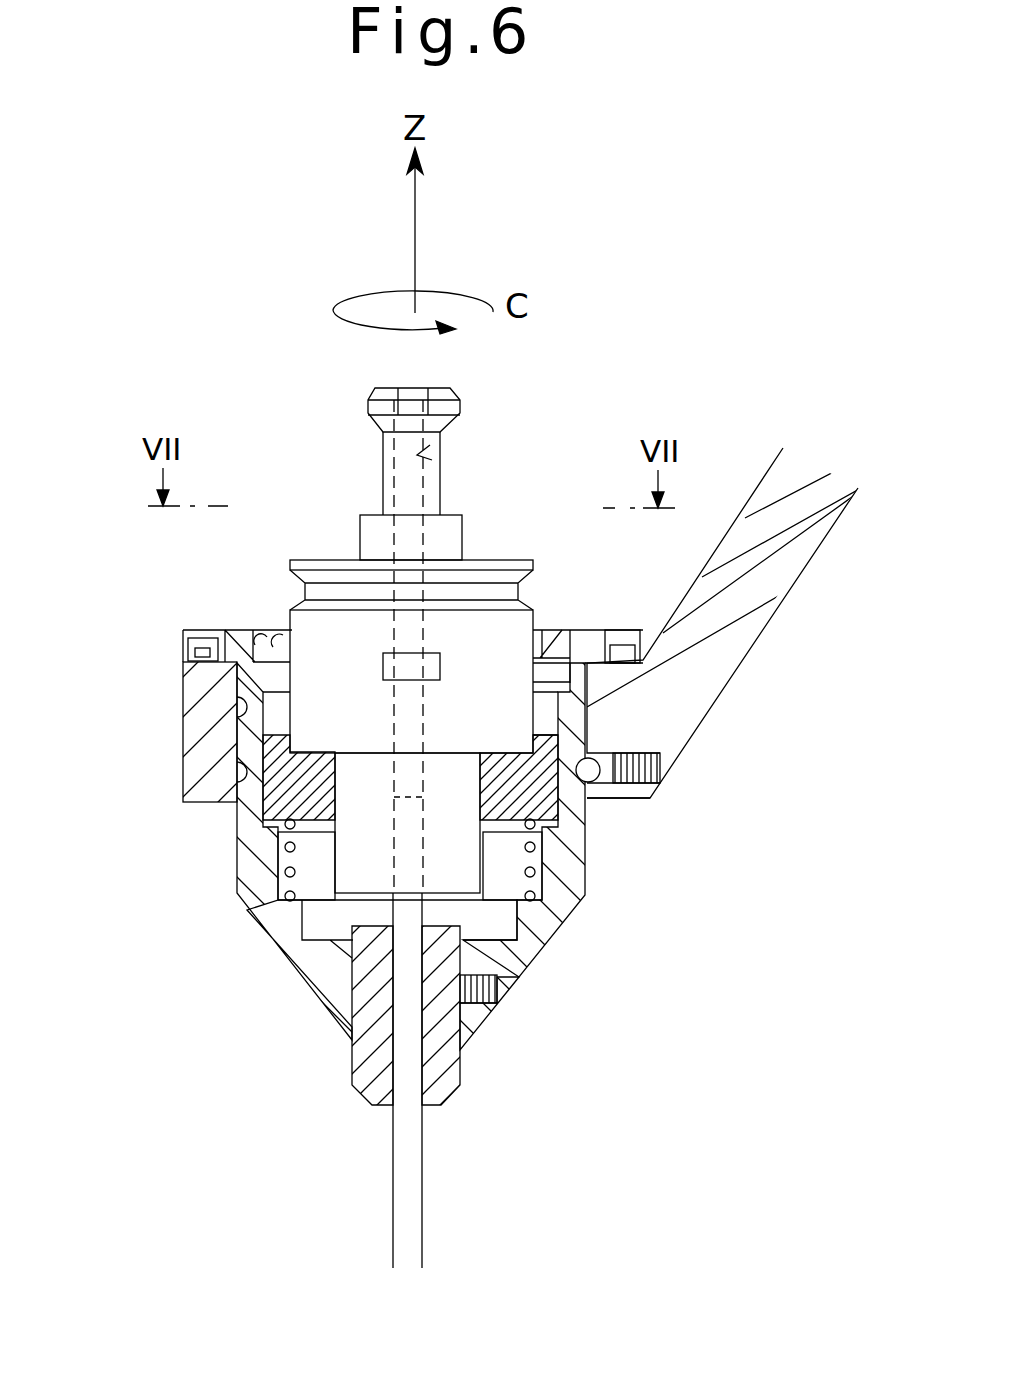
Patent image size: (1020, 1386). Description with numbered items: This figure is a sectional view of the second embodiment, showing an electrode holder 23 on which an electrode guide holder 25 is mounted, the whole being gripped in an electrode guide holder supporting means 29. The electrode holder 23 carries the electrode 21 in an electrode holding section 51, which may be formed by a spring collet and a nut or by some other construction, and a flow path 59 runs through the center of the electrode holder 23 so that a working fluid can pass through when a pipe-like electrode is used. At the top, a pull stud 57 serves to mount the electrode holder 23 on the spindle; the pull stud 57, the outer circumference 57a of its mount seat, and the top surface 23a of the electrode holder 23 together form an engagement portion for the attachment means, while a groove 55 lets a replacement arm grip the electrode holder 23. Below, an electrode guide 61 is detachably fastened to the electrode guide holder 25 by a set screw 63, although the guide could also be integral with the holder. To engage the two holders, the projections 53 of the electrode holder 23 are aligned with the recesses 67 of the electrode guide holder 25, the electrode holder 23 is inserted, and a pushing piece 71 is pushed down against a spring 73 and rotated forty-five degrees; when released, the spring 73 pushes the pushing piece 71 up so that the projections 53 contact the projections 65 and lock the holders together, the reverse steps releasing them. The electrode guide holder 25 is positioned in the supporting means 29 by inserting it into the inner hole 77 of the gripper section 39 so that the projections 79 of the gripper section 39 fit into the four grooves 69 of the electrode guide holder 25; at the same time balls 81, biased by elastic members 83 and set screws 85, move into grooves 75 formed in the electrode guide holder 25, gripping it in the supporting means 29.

The electrode 21 is at (422, 1210).
The electrode holder 23 is at (503, 632).
The top surface 23a is at (503, 566).
The electrode guide holder 25 is at (587, 870).
The electrode guide holder supporting means 29 is at (778, 612).
The gripper section 39 is at (183, 692).
The electrode holding section 51 is at (525, 945).
The projections 53 is at (567, 630).
The groove 55 is at (533, 598).
The pull stud 57 is at (462, 406).
The outer circumference of mount seat 57a is at (462, 533).
The flow path 59 is at (435, 460).
The electrode guide 61 is at (462, 1065).
The set screw 63 is at (515, 980).
The projections 65 is at (280, 630).
The recesses 67 is at (253, 630).
The grooves 69 is at (187, 630).
The pushing piece 71 is at (275, 807).
The spring 73 is at (280, 850).
The grooves 75 is at (245, 763).
The inner hole 77 is at (253, 703).
The projections 79 is at (188, 652).
The balls 81 is at (598, 750).
The elastic members 83 is at (620, 787).
The set screws 85 is at (680, 773).